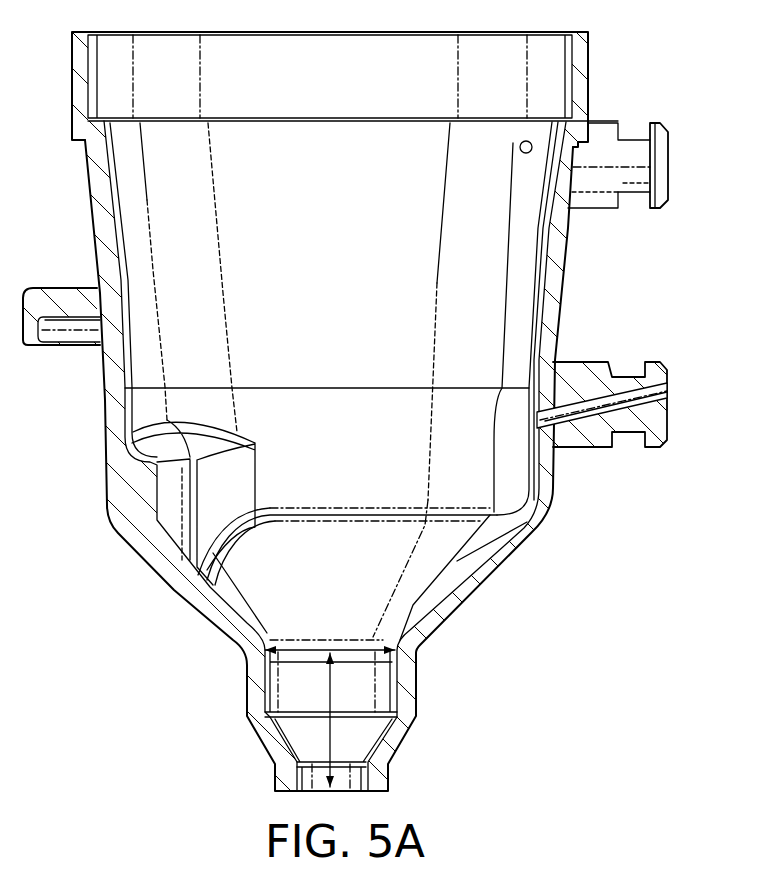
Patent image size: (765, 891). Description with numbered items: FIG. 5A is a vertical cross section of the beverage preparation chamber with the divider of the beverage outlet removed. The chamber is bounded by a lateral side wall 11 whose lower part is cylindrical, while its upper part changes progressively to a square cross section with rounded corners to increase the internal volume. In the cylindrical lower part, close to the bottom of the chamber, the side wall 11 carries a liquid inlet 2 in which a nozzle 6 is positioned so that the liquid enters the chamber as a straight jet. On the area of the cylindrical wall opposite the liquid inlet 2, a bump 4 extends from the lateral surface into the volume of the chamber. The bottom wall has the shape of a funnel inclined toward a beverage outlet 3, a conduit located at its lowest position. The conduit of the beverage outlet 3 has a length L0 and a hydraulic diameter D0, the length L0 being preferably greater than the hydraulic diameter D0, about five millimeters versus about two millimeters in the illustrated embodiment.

The liquid inlet 2 is at (547, 457).
The beverage outlet 3 is at (417, 697).
The bump 4 is at (147, 490).
The nozzle 6 is at (648, 443).
The lateral side wall 11 is at (113, 418).
The hydraulic diameter of the beverage outlet D0 is at (317, 650).
The length of the conduit of the beverage outlet L0 is at (330, 700).